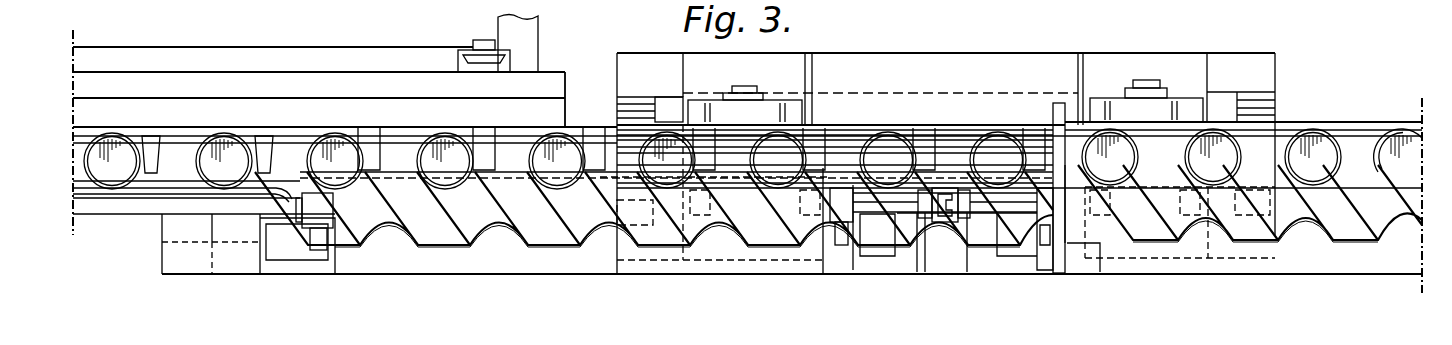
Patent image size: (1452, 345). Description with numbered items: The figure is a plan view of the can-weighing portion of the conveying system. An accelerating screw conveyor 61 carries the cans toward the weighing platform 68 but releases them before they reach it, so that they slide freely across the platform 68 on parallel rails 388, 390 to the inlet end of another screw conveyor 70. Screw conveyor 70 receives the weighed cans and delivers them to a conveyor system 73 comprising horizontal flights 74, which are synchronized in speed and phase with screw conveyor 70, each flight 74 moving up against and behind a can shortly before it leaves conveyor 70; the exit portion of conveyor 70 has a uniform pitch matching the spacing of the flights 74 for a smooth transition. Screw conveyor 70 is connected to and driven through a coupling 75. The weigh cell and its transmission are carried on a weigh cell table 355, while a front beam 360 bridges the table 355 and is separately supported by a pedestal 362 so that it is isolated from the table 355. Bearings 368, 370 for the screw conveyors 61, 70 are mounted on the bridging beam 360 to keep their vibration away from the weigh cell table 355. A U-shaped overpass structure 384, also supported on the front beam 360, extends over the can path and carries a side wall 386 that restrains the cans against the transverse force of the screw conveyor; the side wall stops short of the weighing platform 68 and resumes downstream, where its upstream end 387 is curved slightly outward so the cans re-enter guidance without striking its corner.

The weigh cell table 355 is at (1033, 47).
The pedestal 362 is at (540, 38).
The horizontal flight 74 is at (151, 144).
The conveyor system 73 is at (369, 141).
The upstream end of downstream sidewall portion 387 is at (897, 124).
The rail 388 is at (932, 125).
The weighing platform 68 is at (947, 139).
The side wall 386 is at (1349, 106).
The bearing 370 is at (307, 224).
The front beam 360 is at (420, 268).
The screw conveyor 70 is at (563, 247).
The coupling 75 is at (938, 223).
The bearing 368 is at (1045, 213).
The U-shaped overpass structure 384 is at (1062, 266).
The rail 390 is at (912, 189).
The screw conveyor 61 is at (1331, 246).